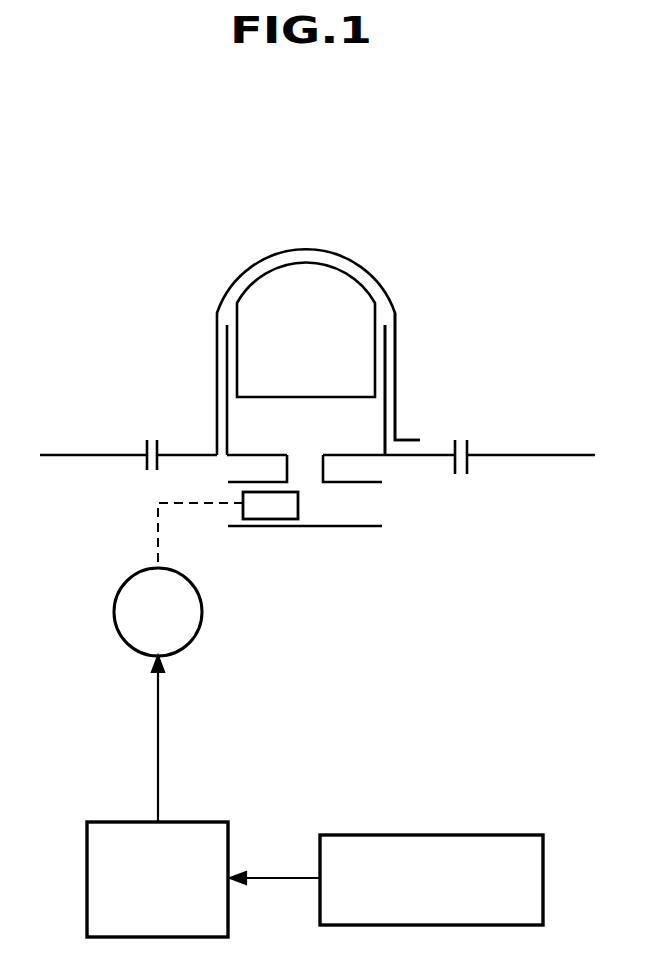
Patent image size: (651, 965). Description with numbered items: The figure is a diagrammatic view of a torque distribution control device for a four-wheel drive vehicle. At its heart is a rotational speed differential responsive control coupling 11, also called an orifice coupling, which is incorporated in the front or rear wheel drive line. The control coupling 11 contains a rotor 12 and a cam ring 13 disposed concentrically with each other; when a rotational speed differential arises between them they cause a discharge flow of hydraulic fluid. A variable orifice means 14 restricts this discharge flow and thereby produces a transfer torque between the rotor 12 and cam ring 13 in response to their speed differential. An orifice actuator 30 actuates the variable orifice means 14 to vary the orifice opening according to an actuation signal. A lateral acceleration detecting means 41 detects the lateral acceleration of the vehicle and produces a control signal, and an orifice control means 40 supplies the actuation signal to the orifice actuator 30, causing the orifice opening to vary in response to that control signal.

The control coupling 11 is at (382, 273).
The rotor 12 is at (385, 400).
The cam ring 13 is at (248, 268).
The variable orifice means 14 is at (300, 480).
The orifice actuator 30 is at (202, 612).
The orifice control means 40 is at (207, 822).
The lateral acceleration detecting means 41 is at (463, 835).